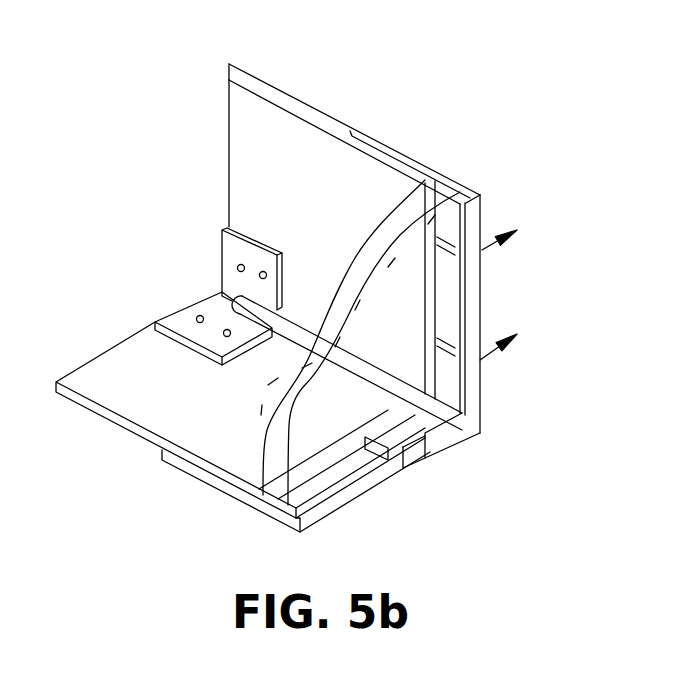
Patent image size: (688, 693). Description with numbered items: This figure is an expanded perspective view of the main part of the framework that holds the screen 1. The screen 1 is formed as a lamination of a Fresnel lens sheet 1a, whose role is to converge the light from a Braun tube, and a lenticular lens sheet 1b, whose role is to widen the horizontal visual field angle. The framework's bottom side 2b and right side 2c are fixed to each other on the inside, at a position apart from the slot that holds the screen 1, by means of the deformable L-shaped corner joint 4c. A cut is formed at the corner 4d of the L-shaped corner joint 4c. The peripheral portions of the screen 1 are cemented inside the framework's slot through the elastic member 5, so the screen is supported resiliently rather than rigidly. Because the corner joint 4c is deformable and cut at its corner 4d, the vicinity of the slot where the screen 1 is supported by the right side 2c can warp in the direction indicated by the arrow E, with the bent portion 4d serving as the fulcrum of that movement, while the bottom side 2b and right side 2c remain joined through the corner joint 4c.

The screen 1 is at (376, 368).
The Fresnel lens sheet 1a is at (270, 443).
The lenticular lens sheet 1b is at (289, 466).
The bottom side 2b is at (152, 405).
The right side 2c is at (292, 140).
The L-shaped corner joint 4c is at (205, 303).
The corner 4d is at (220, 290).
The elastic member 5 is at (450, 183).
The arrow E is at (509, 288).